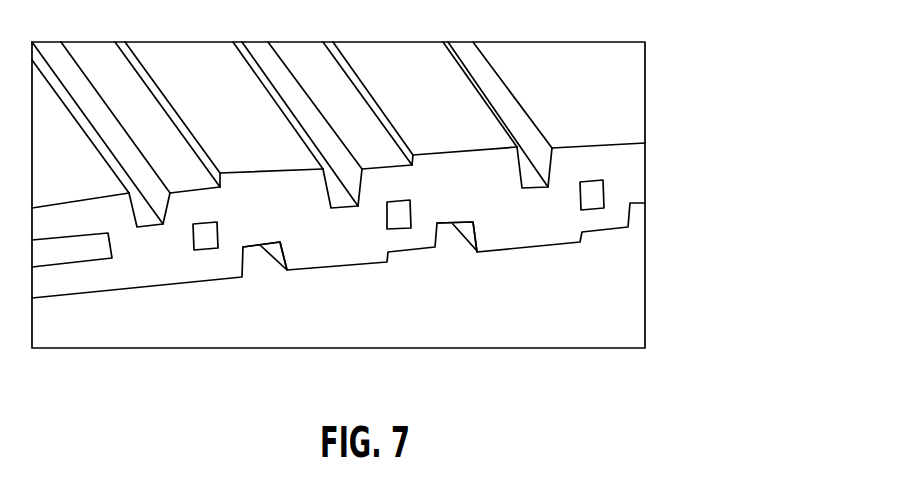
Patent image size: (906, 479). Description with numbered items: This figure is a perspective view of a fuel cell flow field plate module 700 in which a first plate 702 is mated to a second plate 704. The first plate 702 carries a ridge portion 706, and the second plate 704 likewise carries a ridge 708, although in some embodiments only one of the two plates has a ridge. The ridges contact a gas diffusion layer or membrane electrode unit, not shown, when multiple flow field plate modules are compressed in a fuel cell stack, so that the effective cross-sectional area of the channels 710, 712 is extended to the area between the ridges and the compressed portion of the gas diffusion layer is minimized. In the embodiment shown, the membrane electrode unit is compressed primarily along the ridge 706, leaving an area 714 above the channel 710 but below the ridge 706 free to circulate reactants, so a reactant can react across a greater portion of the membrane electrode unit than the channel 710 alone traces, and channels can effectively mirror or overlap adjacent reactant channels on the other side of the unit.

The module 700 is at (645, 57).
The first plate 702 is at (627, 160).
The second plate 704 is at (627, 192).
The ridge portion 706 is at (508, 100).
The ridge 708 is at (543, 245).
The channel 710 is at (540, 147).
The channel 712 is at (450, 240).
The area 714 is at (297, 48).